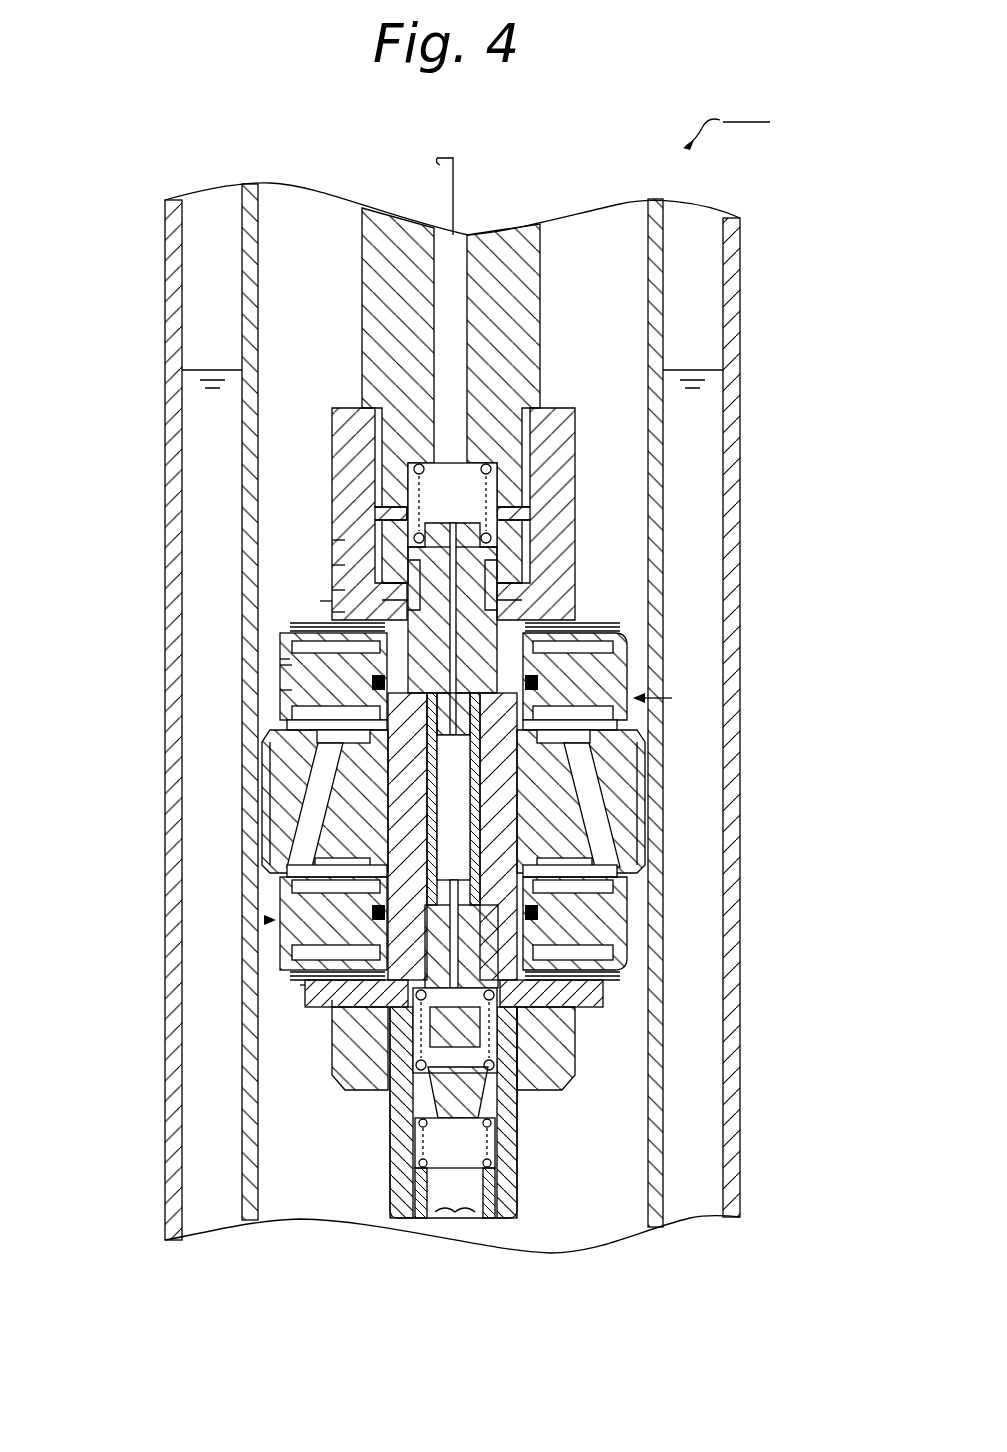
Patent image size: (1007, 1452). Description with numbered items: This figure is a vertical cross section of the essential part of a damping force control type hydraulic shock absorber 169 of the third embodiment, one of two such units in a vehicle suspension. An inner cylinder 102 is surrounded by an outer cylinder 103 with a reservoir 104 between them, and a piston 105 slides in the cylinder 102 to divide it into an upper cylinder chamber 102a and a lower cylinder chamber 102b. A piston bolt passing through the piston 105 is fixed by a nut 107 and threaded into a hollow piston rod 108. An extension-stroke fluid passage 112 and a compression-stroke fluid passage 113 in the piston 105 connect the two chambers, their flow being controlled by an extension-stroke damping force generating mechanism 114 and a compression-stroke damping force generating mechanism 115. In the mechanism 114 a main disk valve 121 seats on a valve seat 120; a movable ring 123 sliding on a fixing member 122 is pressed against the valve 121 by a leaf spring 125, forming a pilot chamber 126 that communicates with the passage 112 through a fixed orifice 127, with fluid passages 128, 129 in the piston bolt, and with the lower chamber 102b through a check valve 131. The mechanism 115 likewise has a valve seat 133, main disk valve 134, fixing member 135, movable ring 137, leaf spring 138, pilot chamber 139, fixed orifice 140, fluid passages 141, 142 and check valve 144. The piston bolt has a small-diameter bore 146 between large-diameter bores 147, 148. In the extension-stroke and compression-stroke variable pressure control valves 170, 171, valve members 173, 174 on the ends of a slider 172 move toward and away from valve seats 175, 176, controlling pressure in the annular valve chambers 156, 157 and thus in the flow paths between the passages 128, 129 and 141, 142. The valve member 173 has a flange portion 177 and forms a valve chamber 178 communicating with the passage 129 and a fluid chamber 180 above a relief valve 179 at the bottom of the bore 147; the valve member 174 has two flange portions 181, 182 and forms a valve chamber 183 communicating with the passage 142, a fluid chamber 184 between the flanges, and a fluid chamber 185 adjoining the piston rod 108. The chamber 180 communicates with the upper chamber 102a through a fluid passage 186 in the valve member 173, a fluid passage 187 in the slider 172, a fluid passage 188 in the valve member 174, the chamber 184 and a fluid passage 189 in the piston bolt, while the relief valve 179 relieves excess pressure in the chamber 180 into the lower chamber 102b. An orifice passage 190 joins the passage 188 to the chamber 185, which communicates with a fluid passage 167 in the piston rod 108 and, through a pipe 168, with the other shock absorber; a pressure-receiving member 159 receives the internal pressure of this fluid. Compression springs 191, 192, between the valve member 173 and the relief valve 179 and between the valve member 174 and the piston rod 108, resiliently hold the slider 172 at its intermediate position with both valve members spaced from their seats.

The inner cylinder 102 is at (650, 213).
The upper cylinder chamber 102a is at (613, 267).
The lower cylinder chamber 102b is at (610, 1190).
The outer cylinder 103 is at (727, 220).
The reservoir 104 is at (212, 267).
The piston 105 is at (610, 805).
The nut 107 is at (600, 1065).
The piston rod 108 is at (538, 230).
The extension-stroke fluid passage 112 is at (645, 760).
The compression-stroke fluid passage 113 is at (275, 830).
The extension-stroke damping force generating mechanism 114 is at (280, 965).
The compression-stroke damping force generating mechanism 115 is at (613, 690).
The valve seat 120 is at (270, 873).
The main disk valve 121 is at (272, 895).
The fixing member 122 is at (600, 915).
The movable ring 123 is at (290, 1000).
The leaf spring 125 is at (300, 985).
The pilot chamber 126 is at (264, 920).
The fixed orifice 127 is at (620, 871).
The fluid passage 128 is at (625, 893).
The fluid passage 129 is at (600, 990).
The check valve 131 is at (332, 1000).
The valve seat 133 is at (620, 738).
The main disk valve 134 is at (627, 722).
The fixing member 135 is at (282, 665).
The movable ring 137 is at (672, 698).
The leaf spring 138 is at (627, 636).
The pilot chamber 139 is at (268, 725).
The fixed orifice 140 is at (265, 773).
The fluid passage 141 is at (268, 812).
The fluid passage 142 is at (320, 601).
The check valve 144 is at (335, 612).
The small-diameter bore 146 is at (480, 745).
The large-diameter bore 147 is at (345, 1015).
The large-diameter bore 148 is at (460, 620).
The valve chamber 156 is at (640, 862).
The valve chamber 157 is at (282, 690).
The pressure-receiving member 159 is at (505, 478).
The fluid passage 167 is at (518, 253).
The pipe 168 is at (455, 200).
The damping force control type hydraulic shock absorber 169 is at (727, 122).
The extension-stroke variable pressure control valve 170 is at (620, 955).
The compression-stroke variable pressure control valve 171 is at (282, 659).
The slider 172 is at (486, 780).
The valve member 173 is at (497, 1060).
The valve member 174 is at (497, 600).
The valve seat 175 is at (285, 950).
The valve seat 176 is at (600, 680).
The flange portion 177 is at (490, 1035).
The valve chamber 178 is at (332, 1012).
The relief valve 179 is at (418, 1118).
The fluid chamber 180 is at (575, 1040).
The flange portion 181 is at (345, 565).
The flange portion 182 is at (335, 522).
The valve chamber 183 is at (535, 640).
The fluid chamber 184 is at (340, 548).
The fluid chamber 185 is at (471, 468).
The fluid passage 186 is at (625, 905).
The fluid passage 187 is at (565, 850).
The fluid passage 188 is at (523, 605).
The fluid passage 189 is at (340, 590).
The orifice passage 190 is at (500, 578).
The compression spring 191 is at (443, 1087).
The compression spring 192 is at (457, 555).